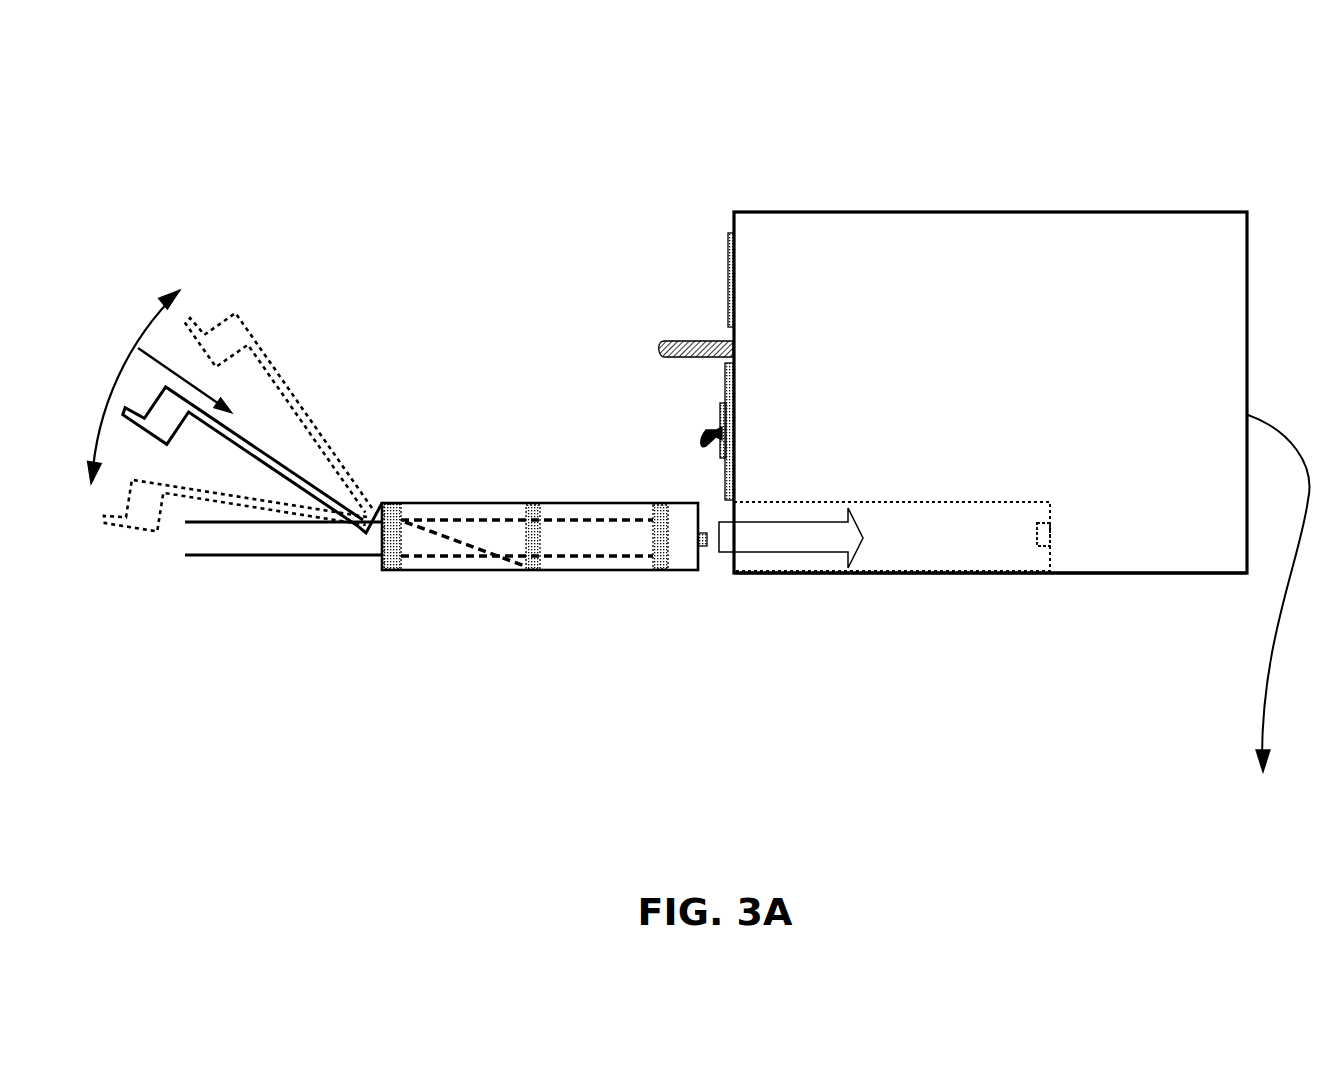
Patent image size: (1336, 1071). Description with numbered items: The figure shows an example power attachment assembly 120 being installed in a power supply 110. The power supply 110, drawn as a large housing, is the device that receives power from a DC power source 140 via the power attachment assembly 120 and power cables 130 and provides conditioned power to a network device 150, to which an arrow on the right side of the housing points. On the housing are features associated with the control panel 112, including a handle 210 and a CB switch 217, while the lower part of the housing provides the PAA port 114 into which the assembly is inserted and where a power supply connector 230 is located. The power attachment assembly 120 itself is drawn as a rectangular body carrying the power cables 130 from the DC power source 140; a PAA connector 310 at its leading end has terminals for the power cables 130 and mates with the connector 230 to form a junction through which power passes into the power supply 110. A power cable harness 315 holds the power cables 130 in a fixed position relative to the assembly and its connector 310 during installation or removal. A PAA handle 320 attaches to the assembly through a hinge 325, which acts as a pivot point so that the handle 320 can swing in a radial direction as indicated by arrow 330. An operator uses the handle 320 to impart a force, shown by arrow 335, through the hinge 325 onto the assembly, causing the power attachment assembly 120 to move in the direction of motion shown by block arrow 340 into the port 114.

The power supply 110 is at (940, 213).
The control panel 112 is at (732, 273).
The PAA port 114 is at (947, 548).
The power attachment assembly 120 is at (577, 503).
The power cable 130 is at (213, 523).
The DC power source 140 is at (135, 611).
The network device 150 is at (1265, 831).
The handle 210 is at (658, 349).
The CB switch 217 is at (706, 438).
The power supply connector 230 is at (1045, 548).
The PAA connector 310 is at (703, 547).
The power cable harness 315 is at (407, 570).
The PAA handle 320 is at (176, 420).
The PAA handle hinge 325 is at (422, 533).
The arrow 330 is at (145, 325).
The arrow 335 is at (193, 383).
The block arrow 340 is at (805, 500).